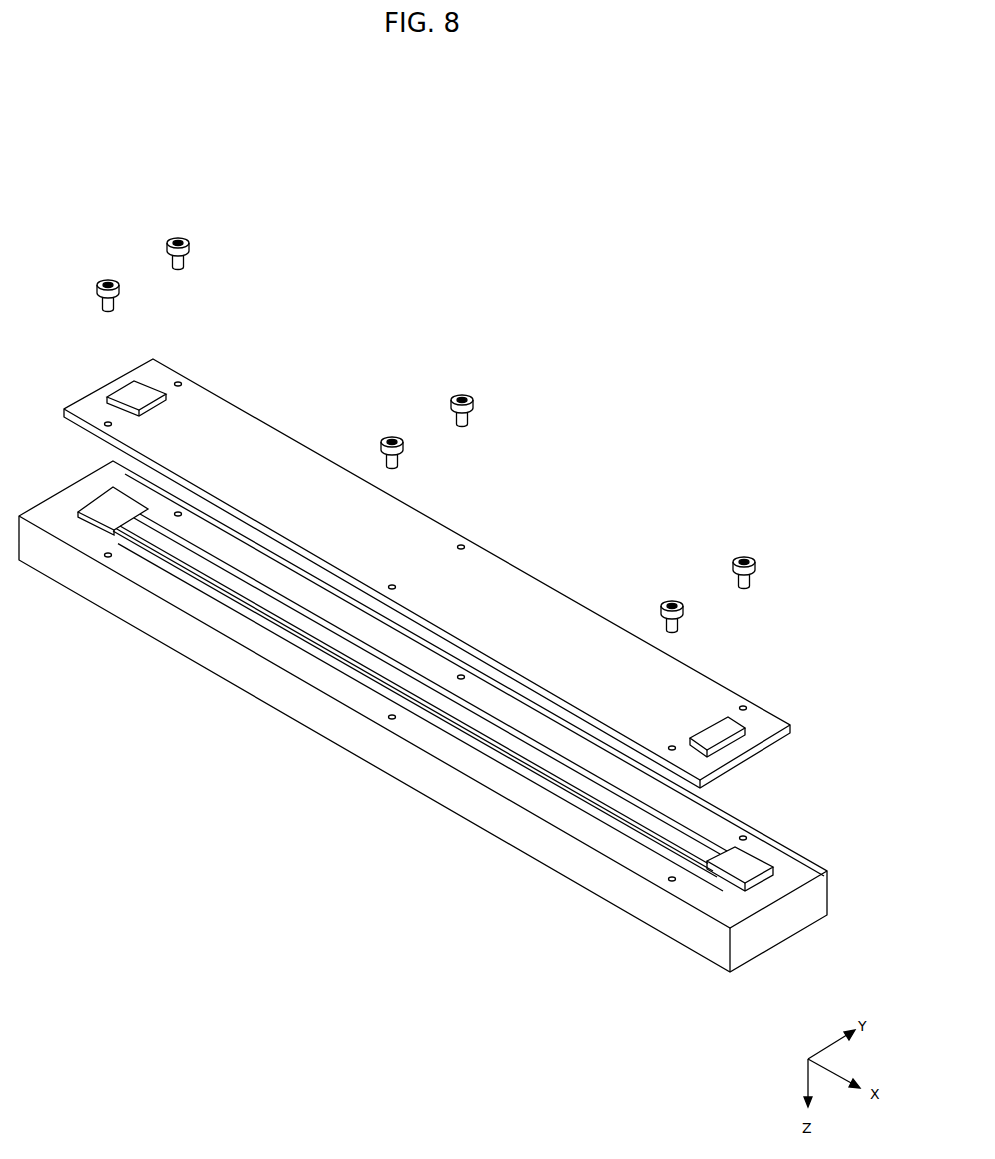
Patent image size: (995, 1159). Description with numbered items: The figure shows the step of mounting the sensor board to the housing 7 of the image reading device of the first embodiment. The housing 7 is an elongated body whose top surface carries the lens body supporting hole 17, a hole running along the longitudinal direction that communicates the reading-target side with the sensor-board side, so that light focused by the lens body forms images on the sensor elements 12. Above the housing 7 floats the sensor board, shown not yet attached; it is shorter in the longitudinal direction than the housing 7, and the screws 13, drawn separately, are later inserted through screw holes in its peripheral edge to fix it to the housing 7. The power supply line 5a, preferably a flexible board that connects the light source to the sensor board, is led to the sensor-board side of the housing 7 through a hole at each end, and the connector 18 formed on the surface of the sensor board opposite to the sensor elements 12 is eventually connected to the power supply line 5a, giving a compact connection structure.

The housing 7 is at (278, 680).
The sensor elements 12 is at (508, 598).
The screws 13 is at (110, 277).
The lens body supporting hole 17 is at (493, 747).
The connector 18 is at (142, 393).
The power supply line 5a is at (103, 503).